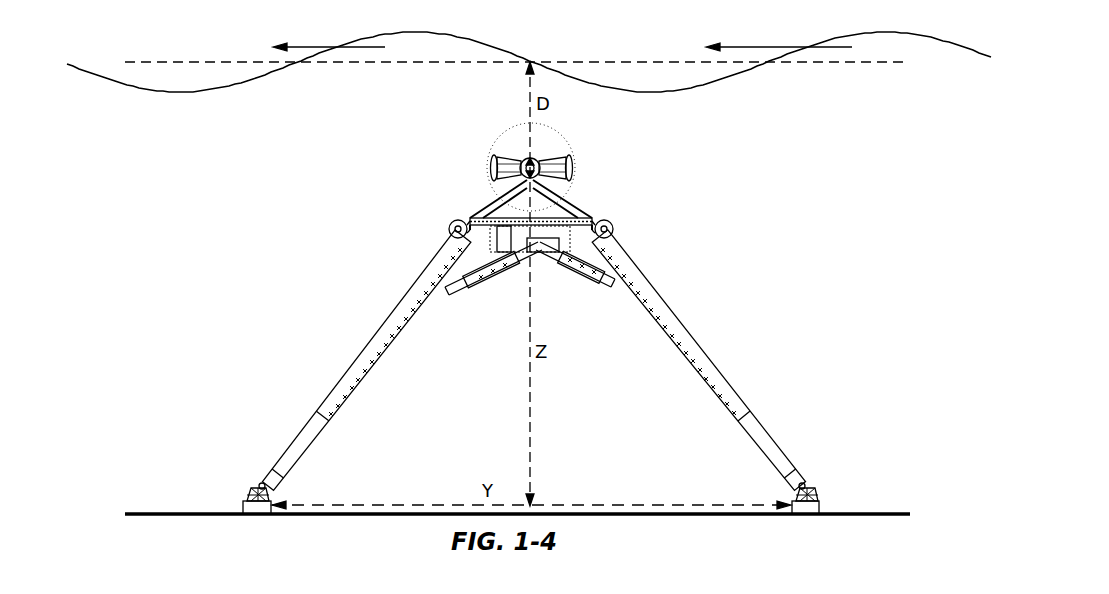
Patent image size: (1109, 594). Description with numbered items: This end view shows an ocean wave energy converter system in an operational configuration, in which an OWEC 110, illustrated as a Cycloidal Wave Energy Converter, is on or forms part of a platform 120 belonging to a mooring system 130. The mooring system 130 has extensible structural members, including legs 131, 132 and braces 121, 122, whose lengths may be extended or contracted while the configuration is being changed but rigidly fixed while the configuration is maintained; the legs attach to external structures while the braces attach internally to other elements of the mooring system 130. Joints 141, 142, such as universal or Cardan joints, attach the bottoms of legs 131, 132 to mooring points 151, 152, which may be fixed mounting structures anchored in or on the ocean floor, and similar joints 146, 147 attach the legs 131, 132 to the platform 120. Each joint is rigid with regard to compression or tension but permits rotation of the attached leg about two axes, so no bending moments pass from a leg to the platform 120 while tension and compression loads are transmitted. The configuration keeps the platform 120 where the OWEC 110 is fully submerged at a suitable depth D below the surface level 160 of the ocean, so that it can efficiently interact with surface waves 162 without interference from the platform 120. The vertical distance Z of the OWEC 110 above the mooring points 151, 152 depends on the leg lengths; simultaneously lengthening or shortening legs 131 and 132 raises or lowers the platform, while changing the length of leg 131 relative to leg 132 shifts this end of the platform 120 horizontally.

The OWEC 110 is at (492, 142).
The platform 120 is at (578, 200).
The brace 121 is at (576, 268).
The brace 122 is at (474, 286).
The mooring system 130 is at (350, 285).
The leg 131 is at (662, 336).
The leg 132 is at (407, 331).
The joint 141 is at (808, 489).
The joint 142 is at (254, 488).
The joint 146 is at (598, 221).
The joint 147 is at (465, 221).
The mooring point 151 is at (816, 507).
The mooring point 152 is at (245, 507).
The surface level 160 is at (618, 63).
The surface waves 162 is at (488, 46).